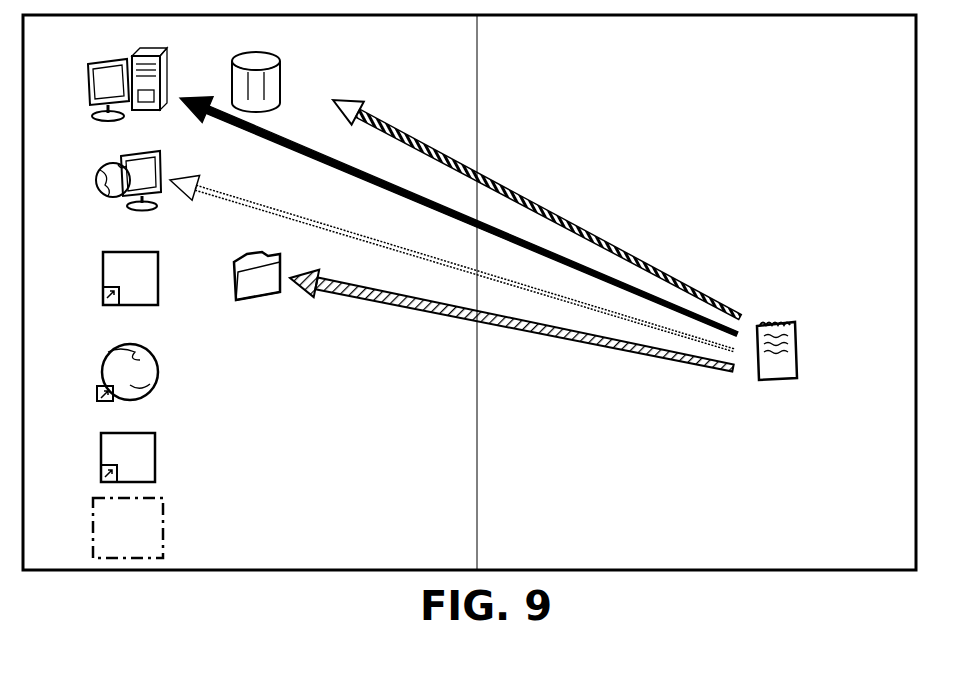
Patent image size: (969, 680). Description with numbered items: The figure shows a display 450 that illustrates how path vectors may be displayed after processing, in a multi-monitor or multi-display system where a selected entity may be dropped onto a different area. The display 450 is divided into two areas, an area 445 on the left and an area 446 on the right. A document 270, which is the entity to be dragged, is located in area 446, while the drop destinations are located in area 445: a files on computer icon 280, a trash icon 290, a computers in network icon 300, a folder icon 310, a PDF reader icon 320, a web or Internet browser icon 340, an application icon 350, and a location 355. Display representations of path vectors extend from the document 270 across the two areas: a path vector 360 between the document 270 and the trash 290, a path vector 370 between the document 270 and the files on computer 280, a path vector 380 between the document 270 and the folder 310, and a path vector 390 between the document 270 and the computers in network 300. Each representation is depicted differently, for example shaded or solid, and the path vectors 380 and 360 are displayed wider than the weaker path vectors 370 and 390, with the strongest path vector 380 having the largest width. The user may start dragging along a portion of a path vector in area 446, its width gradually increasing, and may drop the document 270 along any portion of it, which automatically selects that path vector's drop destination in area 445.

The entity 270 is at (792, 358).
The files on computer icon 280 is at (148, 50).
The trash icon 290 is at (281, 82).
The computers in network icon 300 is at (150, 150).
The folder icon 310 is at (252, 300).
The PDF reader icon 320 is at (133, 252).
The web or Internet browser icon 340 is at (135, 344).
The application icon 350 is at (130, 433).
The location 355 is at (163, 528).
The path vector 360 is at (545, 208).
The path vector 370 is at (405, 194).
The path vector 380 is at (380, 290).
The path vector 390 is at (397, 247).
The area 445 is at (364, 418).
The area 446 is at (728, 192).
The display 450 is at (742, 583).